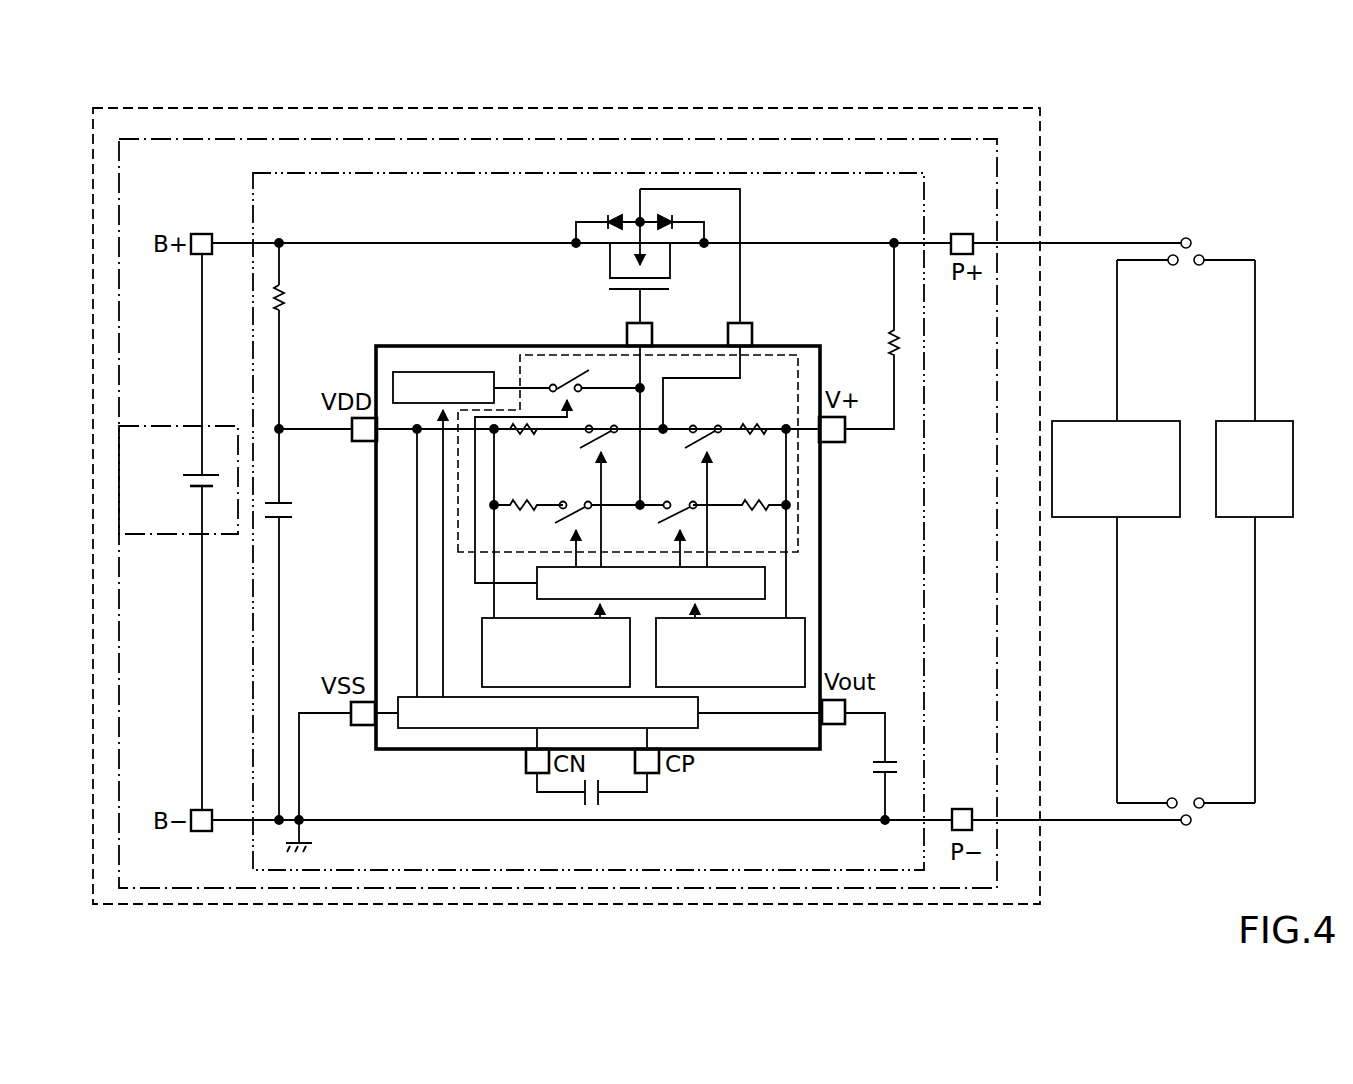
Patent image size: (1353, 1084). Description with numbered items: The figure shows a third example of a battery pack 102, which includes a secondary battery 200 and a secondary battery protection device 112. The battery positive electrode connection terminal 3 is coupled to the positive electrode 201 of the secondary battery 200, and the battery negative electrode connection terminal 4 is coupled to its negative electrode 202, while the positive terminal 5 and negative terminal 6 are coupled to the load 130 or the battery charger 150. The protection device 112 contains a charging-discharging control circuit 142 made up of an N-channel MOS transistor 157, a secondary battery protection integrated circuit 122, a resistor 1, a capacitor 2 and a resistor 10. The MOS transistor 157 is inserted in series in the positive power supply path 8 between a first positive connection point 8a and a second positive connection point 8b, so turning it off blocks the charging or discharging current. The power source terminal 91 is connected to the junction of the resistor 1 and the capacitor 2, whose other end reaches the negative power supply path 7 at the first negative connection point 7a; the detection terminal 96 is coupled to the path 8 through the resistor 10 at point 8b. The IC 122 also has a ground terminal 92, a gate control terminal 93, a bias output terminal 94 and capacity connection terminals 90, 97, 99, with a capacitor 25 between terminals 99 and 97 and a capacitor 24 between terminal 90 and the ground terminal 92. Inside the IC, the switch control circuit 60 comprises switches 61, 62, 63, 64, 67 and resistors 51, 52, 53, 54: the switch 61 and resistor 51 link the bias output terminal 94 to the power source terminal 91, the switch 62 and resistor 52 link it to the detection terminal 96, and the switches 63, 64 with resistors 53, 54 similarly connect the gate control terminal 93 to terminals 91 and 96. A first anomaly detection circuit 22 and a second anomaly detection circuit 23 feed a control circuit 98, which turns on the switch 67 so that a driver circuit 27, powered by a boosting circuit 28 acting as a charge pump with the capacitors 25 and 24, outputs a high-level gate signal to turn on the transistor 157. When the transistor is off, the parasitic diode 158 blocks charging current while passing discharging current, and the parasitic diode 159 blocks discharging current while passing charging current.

The resistor 1 is at (284, 292).
The capacitor 2 is at (287, 501).
The battery positive electrode connection terminal 3 is at (202, 234).
The battery negative electrode connection terminal 4 is at (203, 832).
The positive terminal 5 is at (961, 234).
The negative terminal 6 is at (961, 807).
The negative power supply path 7 is at (320, 818).
The first negative connection point 7a is at (303, 824).
The positive power supply path 8 is at (377, 243).
The first positive connection point 8a is at (283, 247).
The second positive connection point 8b is at (890, 247).
The resistor 10 is at (884, 328).
The first anomaly detection circuit 22 is at (482, 645).
The second anomaly detection circuit 23 is at (795, 618).
The capacitor 24 is at (878, 775).
The capacitor 25 is at (600, 800).
The driver circuit 27 is at (443, 372).
The boosting circuit 28 is at (700, 720).
The resistor 51 is at (523, 435).
The resistor 52 is at (754, 435).
The resistor 53 is at (523, 511).
The resistor 54 is at (757, 511).
The switch control circuit 60 is at (466, 560).
The switch 61 is at (607, 436).
The switch 62 is at (715, 436).
The switch 63 is at (570, 495).
The switch 64 is at (676, 495).
The switch 67 is at (549, 376).
The capacity connection terminal 90 is at (836, 726).
The power source terminal 91 is at (357, 442).
The ground terminal 92 is at (357, 726).
The gate control terminal 93 is at (653, 338).
The bias output terminal 94 is at (753, 338).
The detection terminal 96 is at (834, 443).
The capacity connection terminal 97 is at (659, 773).
The control circuit 98 is at (537, 573).
The capacity connection terminal 99 is at (527, 773).
The battery pack 102 is at (1040, 140).
The secondary battery protection device 112 is at (818, 137).
The secondary battery protection integrated circuit 122 is at (430, 345).
The load 130 is at (1266, 420).
The charging-discharging control circuit 142 is at (765, 172).
The battery charger 150 is at (1128, 420).
The MOS transistor 157 is at (672, 280).
The parasitic diode 158 is at (672, 213).
The parasitic diode 159 is at (596, 211).
The secondary battery 200 is at (190, 481).
The positive electrode 201 is at (188, 474).
The negative electrode 202 is at (188, 488).